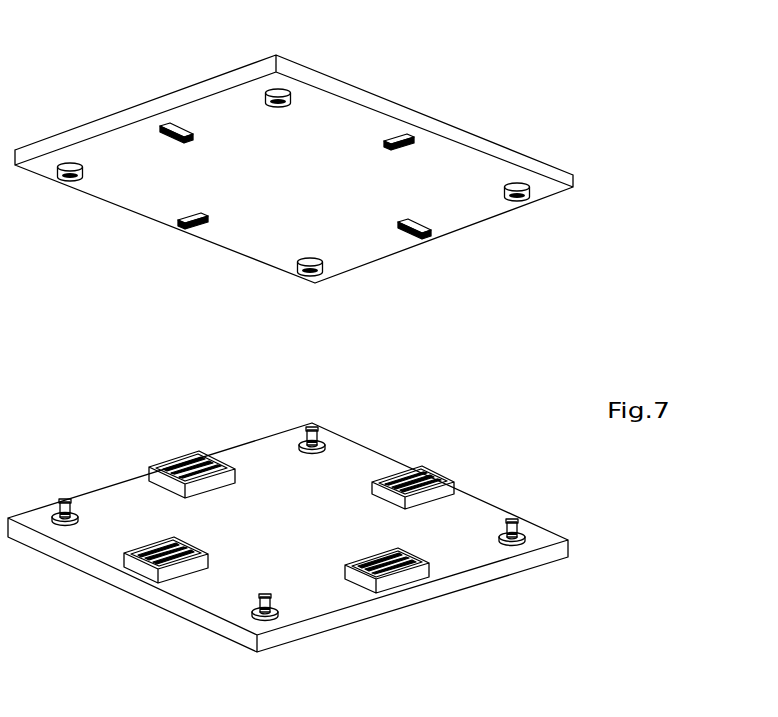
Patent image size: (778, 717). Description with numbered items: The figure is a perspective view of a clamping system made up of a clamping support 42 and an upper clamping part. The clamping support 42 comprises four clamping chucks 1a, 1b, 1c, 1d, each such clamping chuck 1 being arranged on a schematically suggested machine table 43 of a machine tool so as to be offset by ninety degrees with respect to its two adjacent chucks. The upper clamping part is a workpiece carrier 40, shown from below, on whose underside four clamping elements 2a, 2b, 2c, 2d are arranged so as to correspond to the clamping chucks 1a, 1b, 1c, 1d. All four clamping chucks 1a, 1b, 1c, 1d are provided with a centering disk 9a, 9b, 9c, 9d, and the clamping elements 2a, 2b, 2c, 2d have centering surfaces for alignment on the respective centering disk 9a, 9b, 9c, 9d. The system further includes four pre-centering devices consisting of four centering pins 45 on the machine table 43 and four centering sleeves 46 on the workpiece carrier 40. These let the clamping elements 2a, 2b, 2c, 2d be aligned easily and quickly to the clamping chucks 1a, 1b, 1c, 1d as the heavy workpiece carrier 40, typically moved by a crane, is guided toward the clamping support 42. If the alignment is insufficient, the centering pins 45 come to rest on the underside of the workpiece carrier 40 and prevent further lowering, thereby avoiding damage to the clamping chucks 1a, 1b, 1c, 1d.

The clamping chuck 1 is at (672, 165).
The clamping chuck 1a is at (413, 613).
The clamping chuck 1b is at (440, 465).
The clamping chuck 1c is at (165, 452).
The clamping chuck 1d is at (135, 578).
The clamping element 2a is at (400, 148).
The clamping element 2b is at (400, 226).
The clamping element 2c is at (205, 221).
The clamping element 2d is at (187, 129).
The centering disk 9a is at (373, 558).
The centering disk 9b is at (415, 467).
The centering disk 9c is at (190, 458).
The centering disk 9d is at (158, 548).
The workpiece carrier 40 is at (355, 86).
The clamping support 42 is at (473, 412).
The machine table 43 is at (337, 443).
The centering pin 45 is at (312, 425).
The centering sleeve 46 is at (280, 97).